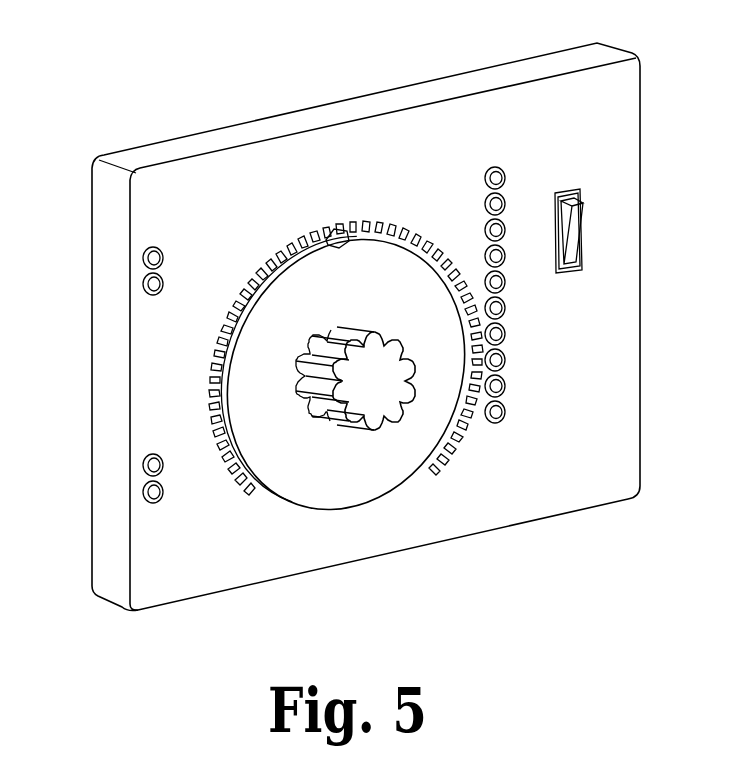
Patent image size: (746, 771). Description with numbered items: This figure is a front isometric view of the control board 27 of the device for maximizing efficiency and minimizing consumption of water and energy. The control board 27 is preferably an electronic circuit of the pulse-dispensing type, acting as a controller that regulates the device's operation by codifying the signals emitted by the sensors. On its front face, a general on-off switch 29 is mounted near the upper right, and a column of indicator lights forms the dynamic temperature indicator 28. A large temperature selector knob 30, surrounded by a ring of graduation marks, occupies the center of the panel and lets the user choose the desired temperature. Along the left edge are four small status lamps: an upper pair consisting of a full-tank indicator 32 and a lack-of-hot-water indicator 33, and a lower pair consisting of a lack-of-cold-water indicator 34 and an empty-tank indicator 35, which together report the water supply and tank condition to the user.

The control board 27 is at (175, 141).
The dynamic temperature indicator 28 is at (516, 469).
The general on-off switch 29 is at (600, 217).
The temperature selector knob 30 is at (378, 496).
The full-tank indicator 32 is at (124, 271).
The lack-of-hot-water indicator 33 is at (125, 310).
The lack-of-cold-water indicator 34 is at (131, 486).
The empty-tank indicator 35 is at (134, 529).